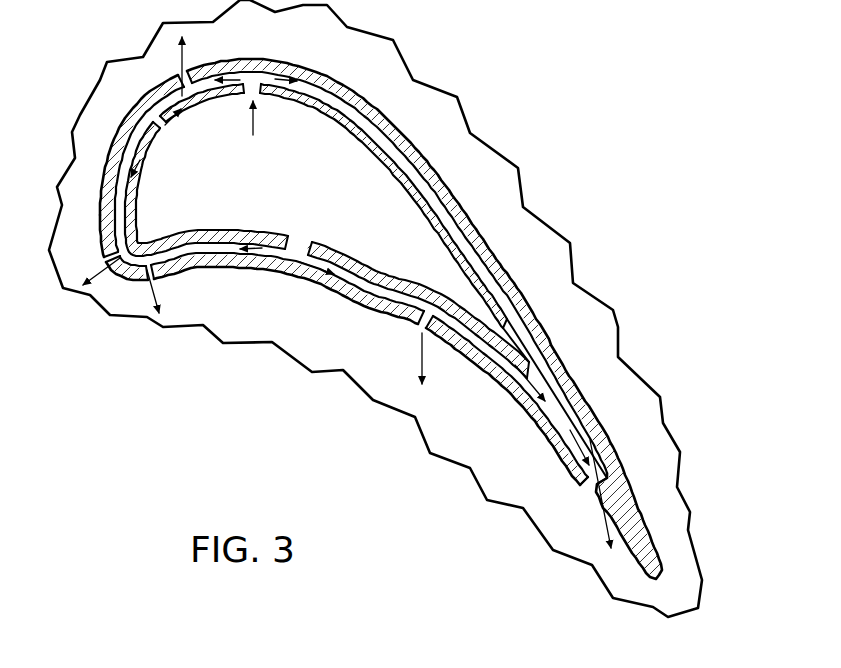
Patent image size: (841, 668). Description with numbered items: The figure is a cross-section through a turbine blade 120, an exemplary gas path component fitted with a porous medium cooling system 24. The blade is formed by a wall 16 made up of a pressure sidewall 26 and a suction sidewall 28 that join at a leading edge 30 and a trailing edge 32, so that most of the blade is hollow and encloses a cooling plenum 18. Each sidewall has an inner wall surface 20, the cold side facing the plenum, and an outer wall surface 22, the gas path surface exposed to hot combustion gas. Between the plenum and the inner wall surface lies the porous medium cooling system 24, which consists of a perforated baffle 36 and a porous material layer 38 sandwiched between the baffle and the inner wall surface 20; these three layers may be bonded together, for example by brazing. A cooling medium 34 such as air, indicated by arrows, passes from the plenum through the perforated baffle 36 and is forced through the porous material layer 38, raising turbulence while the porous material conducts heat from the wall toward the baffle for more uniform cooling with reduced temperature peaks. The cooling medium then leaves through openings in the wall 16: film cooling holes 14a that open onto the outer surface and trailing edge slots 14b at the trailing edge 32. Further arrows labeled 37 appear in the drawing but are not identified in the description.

The turbine blade 120 is at (608, 181).
The wall 16 is at (381, 319).
The suction sidewall 28 is at (460, 204).
The pressure sidewall 26 is at (318, 284).
The cooling plenum 18 is at (286, 177).
The inner wall surface 20 is at (348, 272).
The cooling air flow 37 is at (172, 131).
The outer wall surface 22 is at (400, 328).
The leading edge 30 is at (100, 206).
The trailing edge 32 is at (647, 553).
The cooling medium 34 is at (183, 52).
The film cooling holes 14a is at (180, 90).
The trailing edge slots 14b is at (597, 486).
The porous medium cooling system 24 is at (668, 258).
The perforated baffle 36 is at (512, 333).
The porous material layer 38 is at (557, 397).